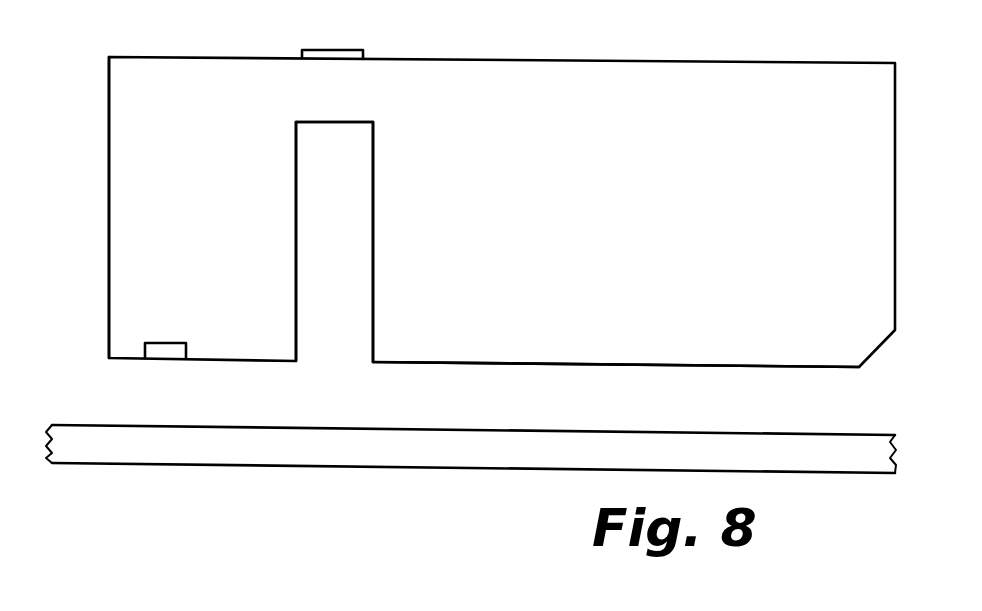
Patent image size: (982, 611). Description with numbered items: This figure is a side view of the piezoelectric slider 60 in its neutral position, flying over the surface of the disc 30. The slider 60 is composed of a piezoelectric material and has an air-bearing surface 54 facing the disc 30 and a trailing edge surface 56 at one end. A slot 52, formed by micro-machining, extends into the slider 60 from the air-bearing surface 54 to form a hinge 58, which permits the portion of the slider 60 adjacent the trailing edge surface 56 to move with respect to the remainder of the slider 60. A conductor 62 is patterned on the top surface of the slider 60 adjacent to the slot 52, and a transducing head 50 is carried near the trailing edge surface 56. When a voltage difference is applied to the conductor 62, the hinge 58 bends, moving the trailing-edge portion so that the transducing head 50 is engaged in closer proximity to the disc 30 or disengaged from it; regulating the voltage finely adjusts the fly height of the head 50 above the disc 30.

The disc 30 is at (380, 468).
The transducing head 50 is at (167, 358).
The slot 52 is at (328, 309).
The air-bearing surface 54 is at (462, 362).
The trailing edge surface 56 is at (109, 123).
The hinge 58 is at (308, 125).
The slider 60 is at (670, 62).
The conductor 62 is at (343, 50).